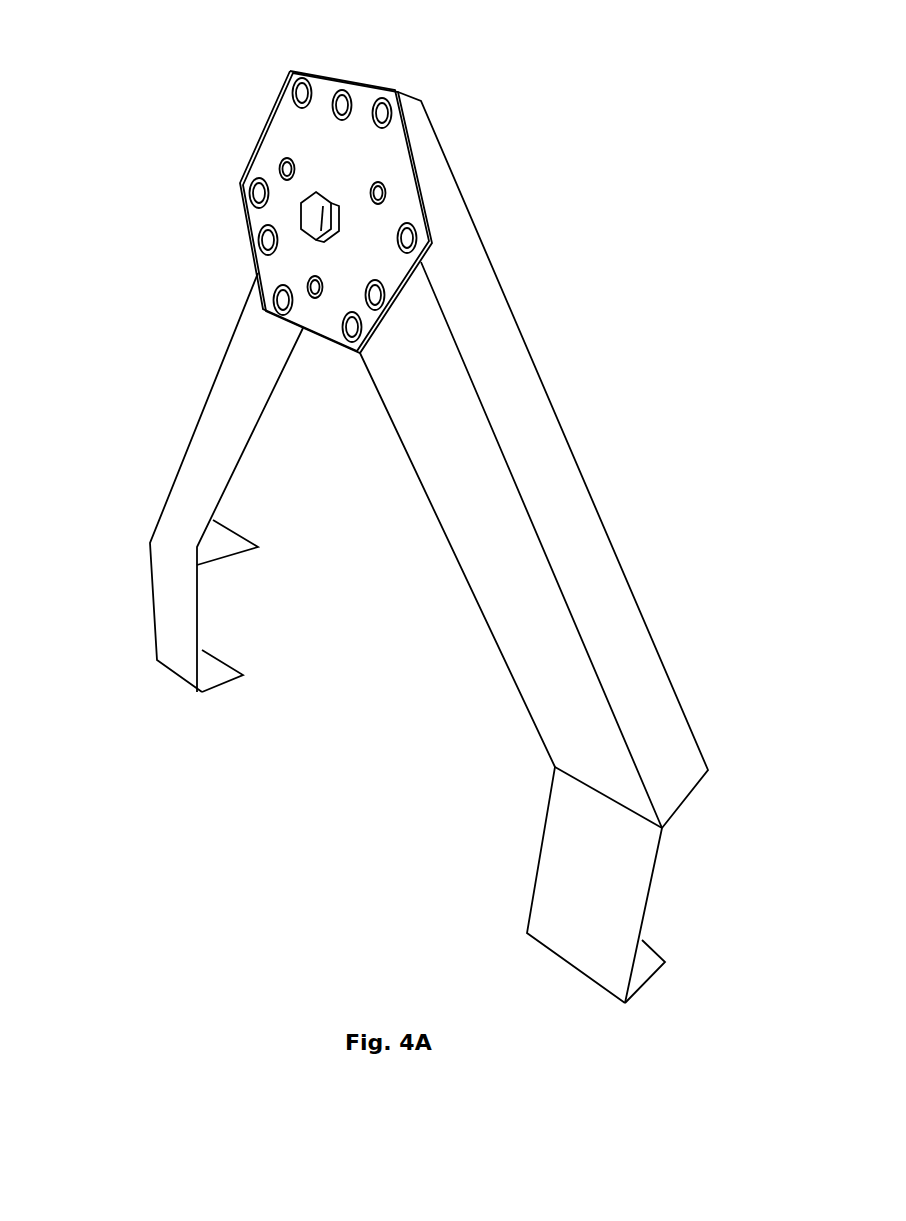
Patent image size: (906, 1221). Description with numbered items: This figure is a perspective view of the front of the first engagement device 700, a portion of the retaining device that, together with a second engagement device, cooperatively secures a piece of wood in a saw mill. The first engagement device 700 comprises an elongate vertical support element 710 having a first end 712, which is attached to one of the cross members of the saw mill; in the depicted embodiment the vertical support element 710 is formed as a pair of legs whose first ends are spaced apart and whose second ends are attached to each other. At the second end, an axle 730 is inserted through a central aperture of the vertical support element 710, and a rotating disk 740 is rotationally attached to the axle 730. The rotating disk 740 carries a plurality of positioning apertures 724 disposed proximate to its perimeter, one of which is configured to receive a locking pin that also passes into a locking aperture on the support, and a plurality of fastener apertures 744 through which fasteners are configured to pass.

The first engagement device 700 is at (595, 294).
The elongate vertical support element 710 is at (548, 460).
The first end 712 is at (180, 602).
The positioning apertures 724 is at (297, 70).
The axle 730 is at (312, 212).
The rotating disk 740 is at (290, 132).
The fastener apertures 744 is at (280, 158).